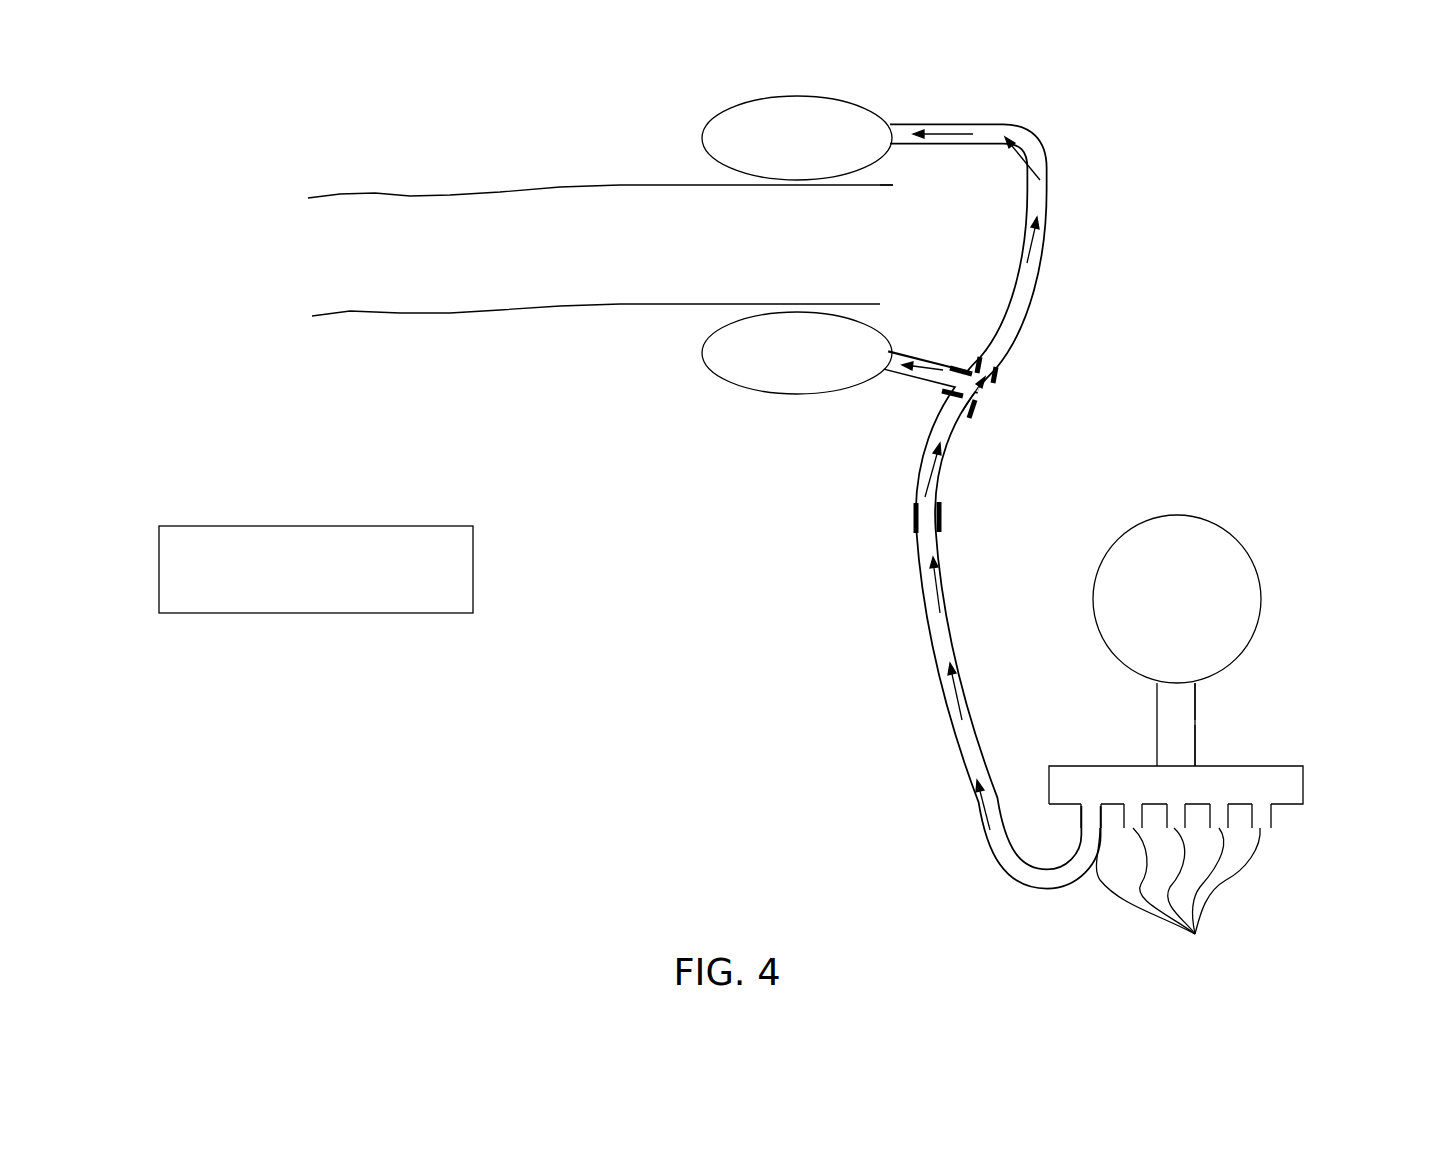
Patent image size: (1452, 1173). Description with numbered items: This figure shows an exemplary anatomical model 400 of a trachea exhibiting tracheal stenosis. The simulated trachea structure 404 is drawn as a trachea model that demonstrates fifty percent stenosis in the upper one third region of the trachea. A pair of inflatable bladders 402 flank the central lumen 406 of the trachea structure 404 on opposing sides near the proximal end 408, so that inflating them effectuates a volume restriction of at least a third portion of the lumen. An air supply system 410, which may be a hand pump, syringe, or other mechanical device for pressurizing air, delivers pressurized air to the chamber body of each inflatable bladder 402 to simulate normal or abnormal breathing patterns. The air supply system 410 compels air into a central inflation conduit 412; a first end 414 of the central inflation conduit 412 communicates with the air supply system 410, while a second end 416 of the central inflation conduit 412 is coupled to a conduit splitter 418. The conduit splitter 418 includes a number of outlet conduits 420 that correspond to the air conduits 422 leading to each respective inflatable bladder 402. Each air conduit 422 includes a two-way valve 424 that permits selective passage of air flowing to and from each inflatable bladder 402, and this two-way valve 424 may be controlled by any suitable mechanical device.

The tracheal stenosis simulation system 400 is at (1166, 140).
The inflatable bladders 402 is at (772, 150).
The simulated trachea structure 404 is at (319, 378).
The central lumen 406 is at (400, 212).
The proximal end 408 is at (878, 302).
The air supply system 410 is at (1156, 614).
The central inflation conduit 412 is at (1157, 725).
The first end 414 is at (1195, 690).
The second end 416 is at (1195, 738).
The conduit splitter 418 is at (1303, 783).
The outlet conduits 420 is at (1178, 900).
The air conduits 422 is at (935, 636).
The two-way valve 424 is at (942, 515).